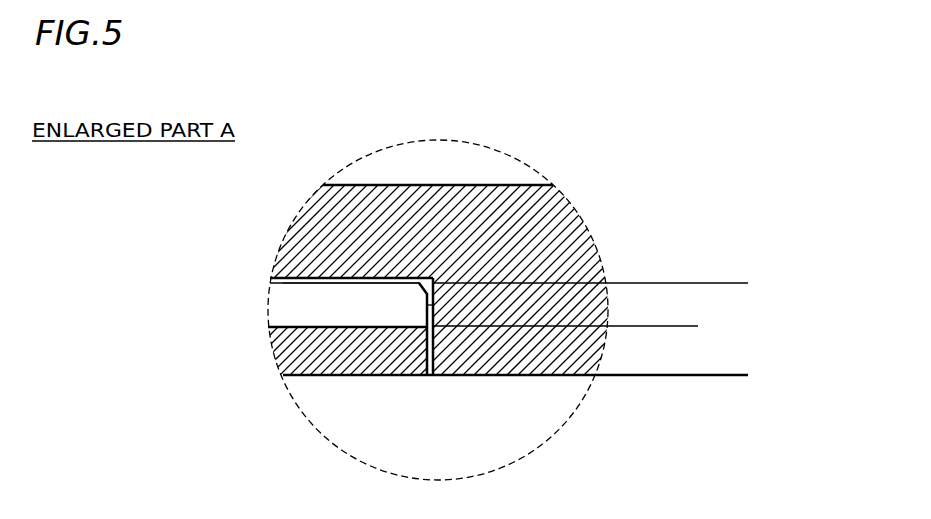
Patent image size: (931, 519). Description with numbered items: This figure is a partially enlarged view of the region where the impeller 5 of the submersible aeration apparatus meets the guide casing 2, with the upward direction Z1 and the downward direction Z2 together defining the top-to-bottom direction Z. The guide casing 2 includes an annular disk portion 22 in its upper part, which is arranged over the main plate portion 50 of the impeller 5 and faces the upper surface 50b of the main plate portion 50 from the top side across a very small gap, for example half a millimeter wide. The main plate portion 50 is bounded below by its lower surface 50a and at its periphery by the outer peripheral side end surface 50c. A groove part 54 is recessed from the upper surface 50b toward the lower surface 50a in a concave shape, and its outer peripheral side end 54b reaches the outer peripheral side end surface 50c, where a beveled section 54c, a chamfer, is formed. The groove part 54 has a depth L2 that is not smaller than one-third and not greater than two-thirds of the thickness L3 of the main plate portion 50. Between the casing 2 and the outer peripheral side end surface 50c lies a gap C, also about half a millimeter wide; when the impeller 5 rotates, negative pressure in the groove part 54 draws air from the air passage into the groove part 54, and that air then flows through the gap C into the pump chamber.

The guide casing 2 is at (292, 207).
The annular disk portion 22 is at (388, 200).
The impeller 5 is at (253, 273).
The main plate portion 50 is at (278, 345).
The lower surface 50a is at (320, 378).
The upper surface 50b is at (305, 276).
The outer peripheral side end surface 50c is at (430, 350).
The groove part 54 is at (295, 310).
The outer peripheral side end 54b is at (433, 305).
The beveled section 54c is at (433, 305).
The gap C is at (430, 378).
The depth L2 is at (697, 284).
The thickness L3 is at (744, 284).
The top-to-bottom direction Z is at (848, 281).
The upward direction Z1 is at (812, 281).
The downward direction Z2 is at (812, 365).